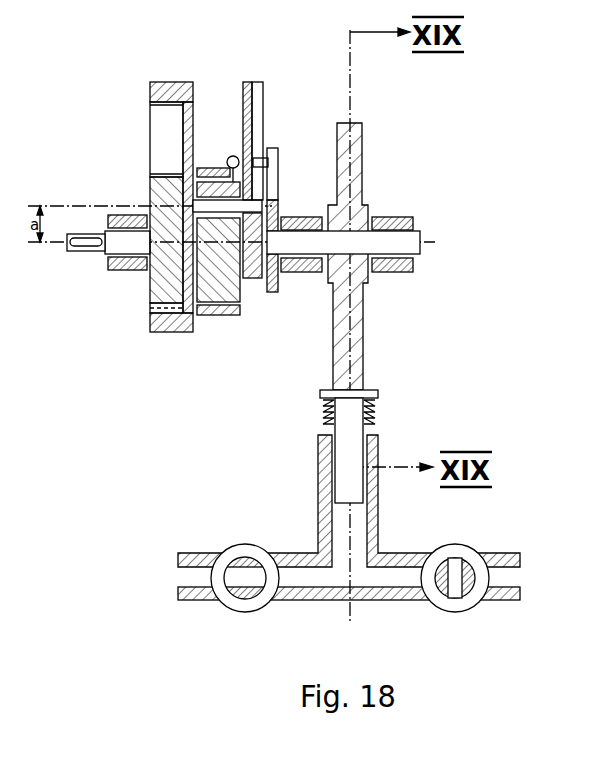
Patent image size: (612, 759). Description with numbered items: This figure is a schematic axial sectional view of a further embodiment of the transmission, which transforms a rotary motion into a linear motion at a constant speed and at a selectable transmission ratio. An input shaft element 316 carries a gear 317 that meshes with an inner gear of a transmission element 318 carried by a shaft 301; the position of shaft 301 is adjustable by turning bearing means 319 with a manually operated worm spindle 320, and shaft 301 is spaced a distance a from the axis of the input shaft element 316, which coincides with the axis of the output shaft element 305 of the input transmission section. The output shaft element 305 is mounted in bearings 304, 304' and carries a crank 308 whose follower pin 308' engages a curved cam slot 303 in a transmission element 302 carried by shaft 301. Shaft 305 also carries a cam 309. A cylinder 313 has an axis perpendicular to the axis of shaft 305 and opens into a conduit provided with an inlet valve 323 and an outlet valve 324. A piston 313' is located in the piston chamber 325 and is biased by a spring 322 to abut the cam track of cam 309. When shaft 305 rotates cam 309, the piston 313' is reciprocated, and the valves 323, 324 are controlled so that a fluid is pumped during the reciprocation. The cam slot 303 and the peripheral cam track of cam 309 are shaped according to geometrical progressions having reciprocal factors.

The shaft 301 is at (265, 203).
The transmission element 302 is at (246, 84).
The curved cam slot 303 is at (258, 108).
The bearing 304 is at (301, 235).
The bearing 304' is at (394, 233).
The output shaft element 305 is at (416, 250).
The crank 308 is at (296, 221).
The follower pin 308' is at (299, 161).
The cam 309 is at (356, 162).
The cylinder 313 is at (349, 517).
The piston 313' is at (384, 447).
The input shaft element 316 is at (79, 252).
The gear 317 is at (153, 283).
The transmission element 318 is at (150, 333).
The bearing means 319 is at (240, 300).
The worm spindle 320 is at (236, 152).
The spring 322 is at (328, 425).
The inlet valve 323 is at (244, 553).
The outlet valve 324 is at (470, 560).
The piston chamber 325 is at (372, 548).